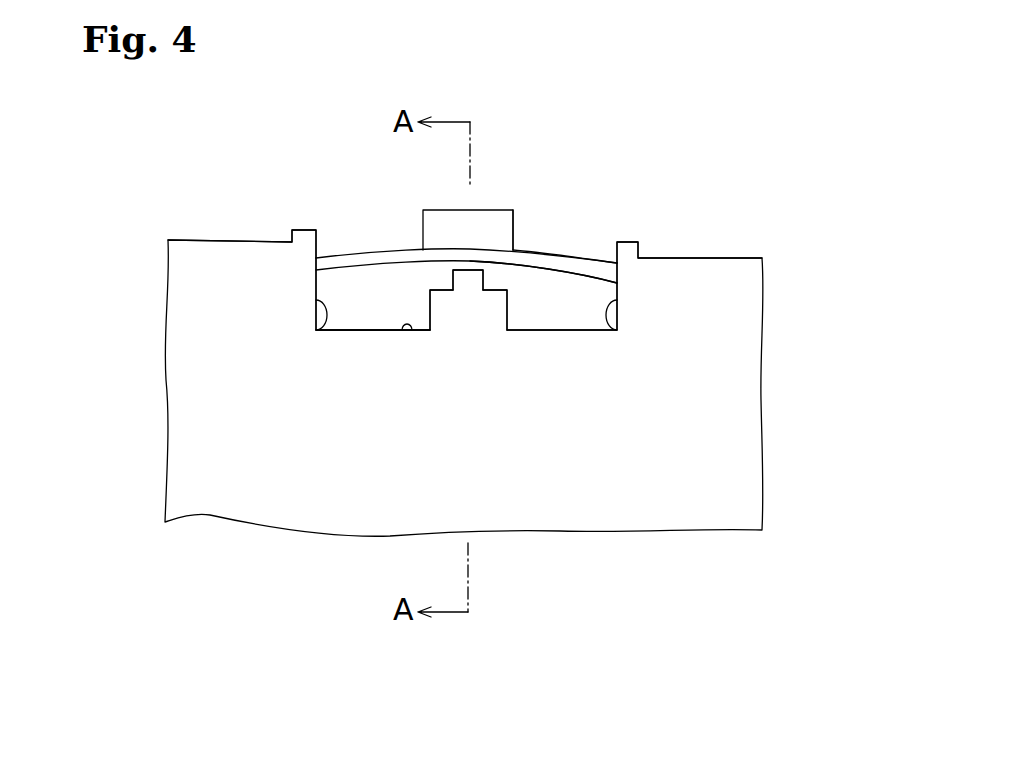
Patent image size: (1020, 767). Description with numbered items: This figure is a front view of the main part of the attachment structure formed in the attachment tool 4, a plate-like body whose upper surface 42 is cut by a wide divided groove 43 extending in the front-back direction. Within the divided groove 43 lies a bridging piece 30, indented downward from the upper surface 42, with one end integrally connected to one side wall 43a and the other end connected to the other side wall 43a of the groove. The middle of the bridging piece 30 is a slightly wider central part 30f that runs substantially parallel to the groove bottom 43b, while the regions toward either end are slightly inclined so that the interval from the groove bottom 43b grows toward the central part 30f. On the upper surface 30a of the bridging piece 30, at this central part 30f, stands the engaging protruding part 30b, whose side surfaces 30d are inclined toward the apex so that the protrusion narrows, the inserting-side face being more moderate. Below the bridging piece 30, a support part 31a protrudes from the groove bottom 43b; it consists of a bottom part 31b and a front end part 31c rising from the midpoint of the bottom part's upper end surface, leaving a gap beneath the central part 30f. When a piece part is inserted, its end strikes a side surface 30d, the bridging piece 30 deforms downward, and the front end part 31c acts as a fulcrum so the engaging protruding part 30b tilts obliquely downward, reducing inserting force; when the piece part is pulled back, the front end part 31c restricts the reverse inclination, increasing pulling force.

The attachment tool 4 is at (723, 350).
The bridging piece 30 is at (353, 256).
The upper surface of the bridging piece 30a is at (562, 259).
The engaging protruding part 30b is at (487, 217).
The side surface of the engaging protruding part 30d is at (509, 220).
The central part of the bridging piece 30f is at (510, 264).
The support part 31a is at (483, 307).
The bottom part 31b is at (453, 309).
The front end part 31c is at (467, 272).
The upper surface of the attachment tool 42 is at (710, 258).
The divided groove 43 is at (353, 331).
The side wall of the divided groove 43a is at (323, 331).
The groove bottom 43b is at (404, 332).